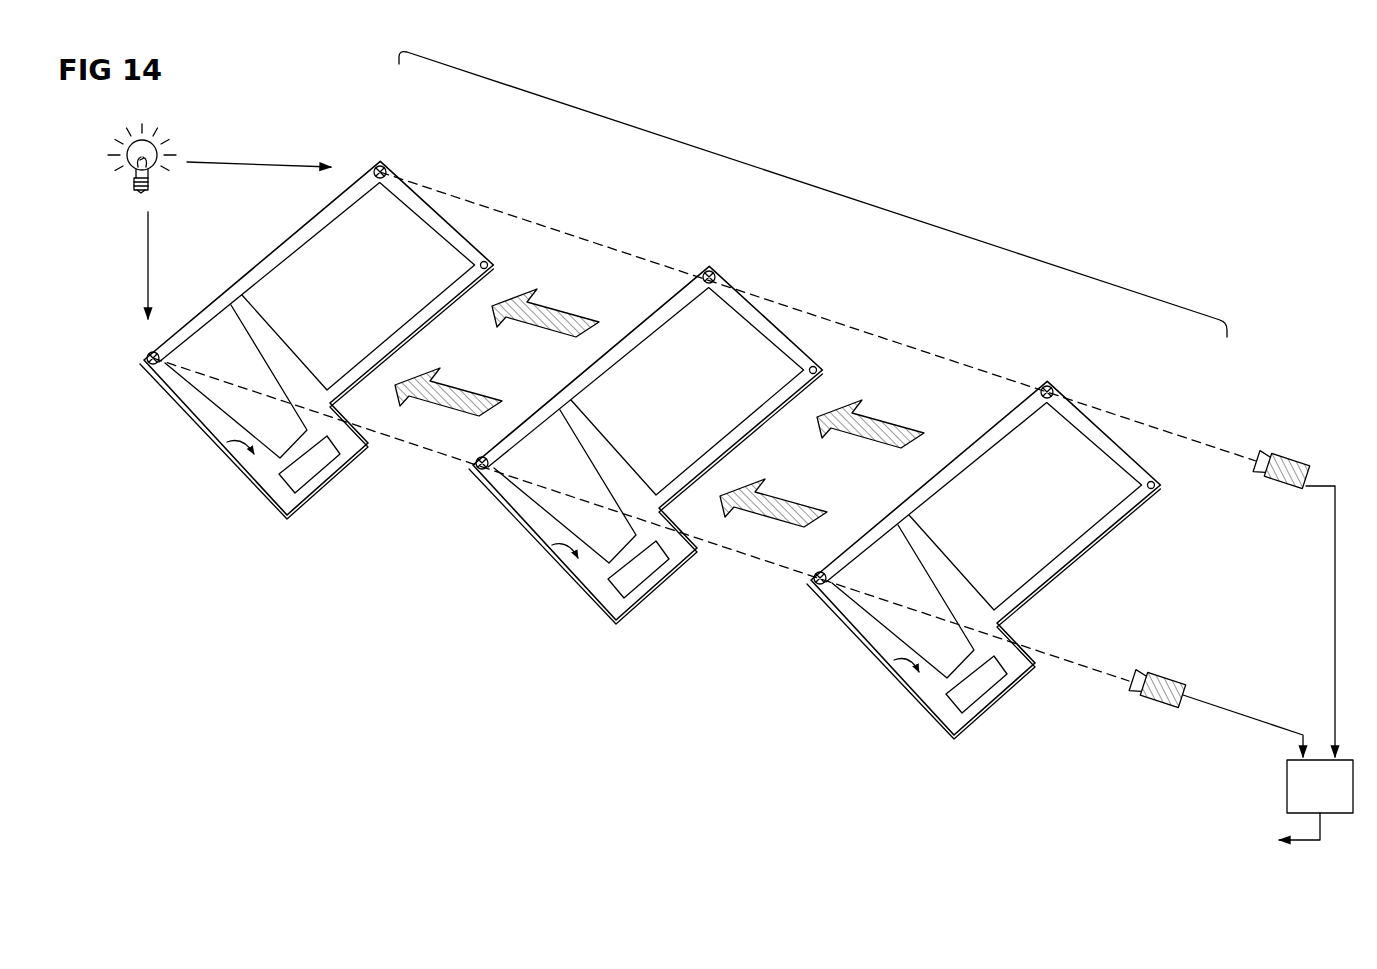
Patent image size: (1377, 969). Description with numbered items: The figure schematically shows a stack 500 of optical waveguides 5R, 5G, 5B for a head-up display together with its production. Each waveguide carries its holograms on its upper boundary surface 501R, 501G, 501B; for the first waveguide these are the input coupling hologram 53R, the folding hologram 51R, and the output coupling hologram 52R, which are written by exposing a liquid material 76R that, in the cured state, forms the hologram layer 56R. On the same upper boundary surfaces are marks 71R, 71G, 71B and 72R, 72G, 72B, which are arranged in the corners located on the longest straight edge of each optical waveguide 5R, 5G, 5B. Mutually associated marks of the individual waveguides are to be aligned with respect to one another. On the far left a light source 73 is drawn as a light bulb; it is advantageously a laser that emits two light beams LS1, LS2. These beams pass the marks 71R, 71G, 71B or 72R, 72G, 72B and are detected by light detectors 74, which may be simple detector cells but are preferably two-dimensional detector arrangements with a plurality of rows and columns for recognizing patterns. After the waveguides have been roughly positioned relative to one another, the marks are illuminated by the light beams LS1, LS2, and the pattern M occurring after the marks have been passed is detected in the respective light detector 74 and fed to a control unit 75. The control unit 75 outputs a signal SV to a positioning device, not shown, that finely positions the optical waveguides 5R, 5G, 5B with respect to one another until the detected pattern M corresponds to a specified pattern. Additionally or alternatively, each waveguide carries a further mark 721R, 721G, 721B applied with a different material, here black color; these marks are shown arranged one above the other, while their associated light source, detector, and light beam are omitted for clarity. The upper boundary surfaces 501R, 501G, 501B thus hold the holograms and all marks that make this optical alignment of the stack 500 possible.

The light source 73 is at (132, 175).
The stack 500 is at (827, 188).
The light beam LS1 is at (183, 395).
The light beam LS2 is at (513, 216).
The optical waveguide 5B is at (327, 313).
The optical waveguide 5G is at (655, 422).
The optical waveguide 5R is at (984, 534).
The mark 71B is at (110, 379).
The mark 71G is at (439, 485).
The mark 71R is at (778, 598).
The mark 72B is at (380, 129).
The mark 72G is at (707, 236).
The mark 72R is at (1047, 348).
The mark 721B is at (537, 268).
The mark 721G is at (865, 377).
The mark 721R is at (1193, 520).
The upper boundary surface 501B is at (190, 472).
The upper boundary surface 501G is at (515, 576).
The upper boundary surface 501R is at (858, 690).
The output coupling hologram 52R is at (999, 471).
The folding hologram 51R is at (875, 601).
The input coupling hologram 53R is at (992, 712).
The hologram layer 56R is at (984, 618).
The liquid material 76R is at (984, 618).
The light detector 74 is at (1293, 452).
The pattern M is at (1272, 621).
The control unit 75 is at (1287, 785).
The signal SV is at (1318, 833).